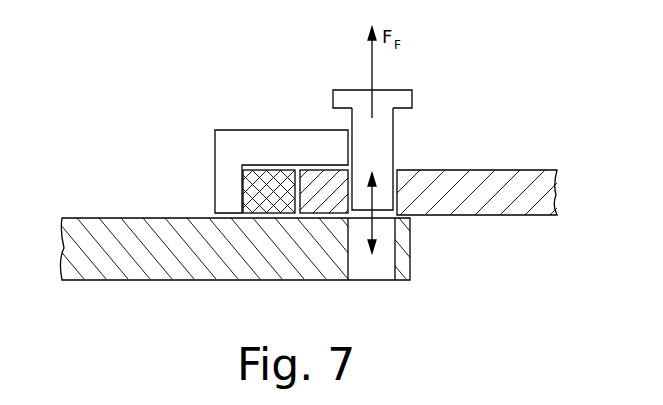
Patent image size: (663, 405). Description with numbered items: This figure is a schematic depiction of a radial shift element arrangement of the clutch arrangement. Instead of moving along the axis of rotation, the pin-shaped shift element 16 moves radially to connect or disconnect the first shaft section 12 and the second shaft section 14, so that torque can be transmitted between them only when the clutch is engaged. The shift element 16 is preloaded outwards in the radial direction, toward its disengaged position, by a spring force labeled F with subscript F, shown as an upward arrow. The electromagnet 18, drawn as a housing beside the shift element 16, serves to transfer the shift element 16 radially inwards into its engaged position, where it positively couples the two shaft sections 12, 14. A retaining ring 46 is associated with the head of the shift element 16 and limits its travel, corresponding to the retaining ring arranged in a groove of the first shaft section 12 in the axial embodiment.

The first shaft section 12 is at (503, 203).
The second shaft section 14 is at (98, 263).
The shift element 16 is at (380, 138).
The electromagnet 18 is at (225, 130).
The second retaining ring 46 is at (400, 97).